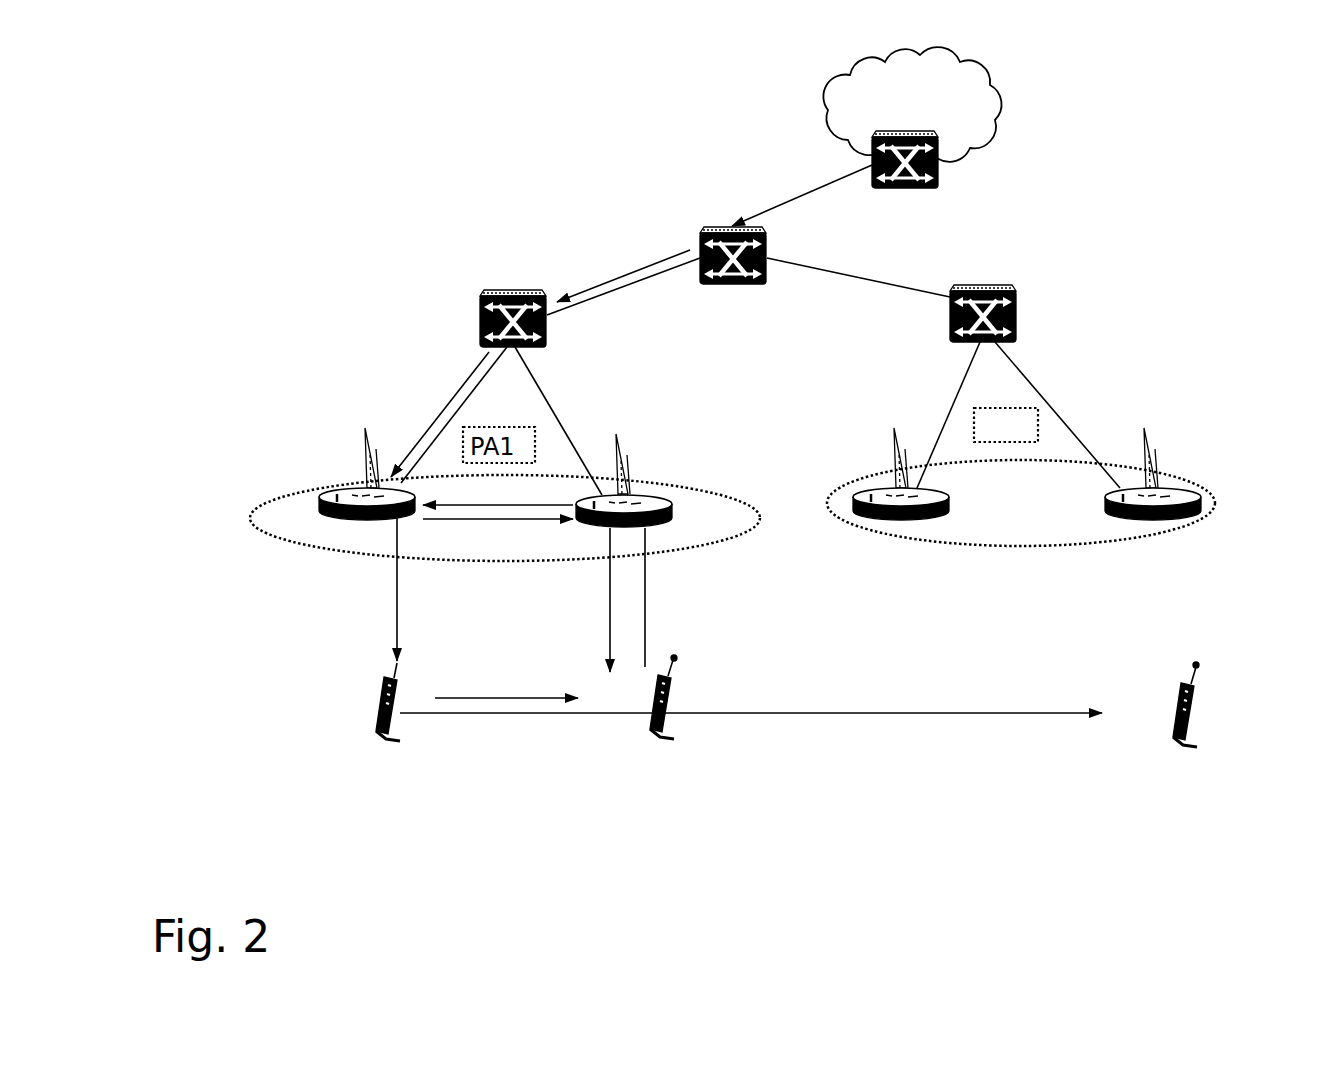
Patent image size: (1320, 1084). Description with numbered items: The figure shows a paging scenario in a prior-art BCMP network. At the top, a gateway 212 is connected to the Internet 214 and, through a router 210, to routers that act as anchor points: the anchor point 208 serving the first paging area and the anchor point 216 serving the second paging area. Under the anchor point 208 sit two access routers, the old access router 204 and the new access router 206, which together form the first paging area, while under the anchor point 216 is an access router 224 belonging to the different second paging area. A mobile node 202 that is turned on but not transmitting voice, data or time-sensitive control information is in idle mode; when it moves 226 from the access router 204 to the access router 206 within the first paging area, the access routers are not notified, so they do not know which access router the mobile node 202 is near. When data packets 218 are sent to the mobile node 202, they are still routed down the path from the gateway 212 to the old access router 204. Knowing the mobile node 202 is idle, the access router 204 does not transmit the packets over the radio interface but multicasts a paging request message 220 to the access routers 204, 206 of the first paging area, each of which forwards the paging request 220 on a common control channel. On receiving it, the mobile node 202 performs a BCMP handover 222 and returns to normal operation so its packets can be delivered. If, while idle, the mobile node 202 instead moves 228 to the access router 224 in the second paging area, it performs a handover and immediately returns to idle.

The mobile node 202 is at (753, 701).
The access router 204 is at (332, 474).
The access router 206 is at (652, 480).
The anchor point 208 is at (457, 315).
The router 210 is at (759, 255).
The gateway 212 is at (905, 175).
The Internet 214 is at (912, 106).
The anchor point 216 is at (1019, 313).
The data packets 218 is at (631, 324).
The paging request message 220 is at (511, 595).
The BCMP handover 222 is at (567, 571).
The access router 224 is at (1038, 477).
The movement to new AR 226 is at (506, 689).
The movement to different paging area 228 is at (751, 695).